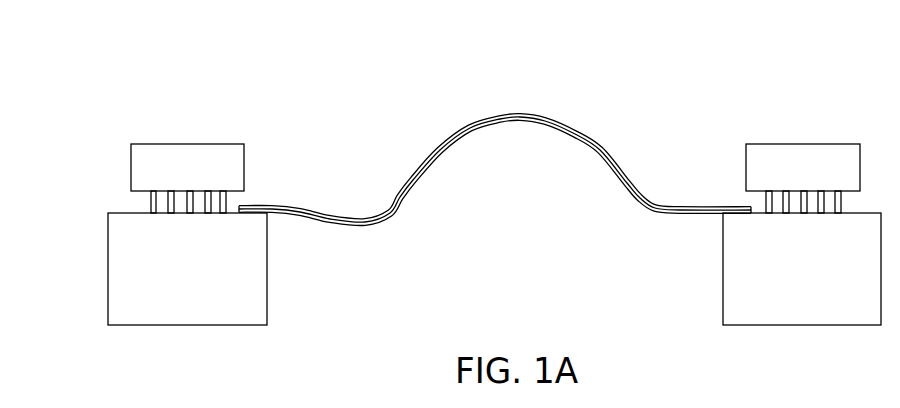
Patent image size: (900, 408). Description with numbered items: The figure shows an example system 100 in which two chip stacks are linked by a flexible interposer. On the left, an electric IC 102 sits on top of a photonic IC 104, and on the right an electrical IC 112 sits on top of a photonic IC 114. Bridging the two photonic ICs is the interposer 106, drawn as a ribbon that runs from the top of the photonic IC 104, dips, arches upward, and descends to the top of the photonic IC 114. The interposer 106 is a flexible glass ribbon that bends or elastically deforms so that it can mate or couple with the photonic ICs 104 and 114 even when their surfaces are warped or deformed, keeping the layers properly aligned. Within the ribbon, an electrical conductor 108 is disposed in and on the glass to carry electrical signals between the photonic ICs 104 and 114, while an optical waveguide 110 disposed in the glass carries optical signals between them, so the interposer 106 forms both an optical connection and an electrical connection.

The system 100 is at (188, 70).
The electric IC 102 is at (208, 175).
The photonic IC 104 is at (208, 274).
The interposer 106 is at (453, 127).
The electrical conductor 108 is at (415, 173).
The optical waveguide 110 is at (420, 182).
The electrical IC 112 is at (823, 175).
The photonic IC 114 is at (823, 274).